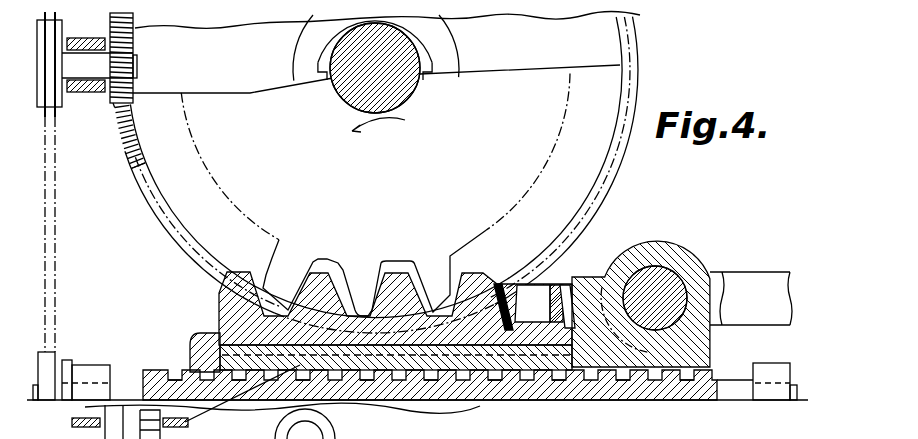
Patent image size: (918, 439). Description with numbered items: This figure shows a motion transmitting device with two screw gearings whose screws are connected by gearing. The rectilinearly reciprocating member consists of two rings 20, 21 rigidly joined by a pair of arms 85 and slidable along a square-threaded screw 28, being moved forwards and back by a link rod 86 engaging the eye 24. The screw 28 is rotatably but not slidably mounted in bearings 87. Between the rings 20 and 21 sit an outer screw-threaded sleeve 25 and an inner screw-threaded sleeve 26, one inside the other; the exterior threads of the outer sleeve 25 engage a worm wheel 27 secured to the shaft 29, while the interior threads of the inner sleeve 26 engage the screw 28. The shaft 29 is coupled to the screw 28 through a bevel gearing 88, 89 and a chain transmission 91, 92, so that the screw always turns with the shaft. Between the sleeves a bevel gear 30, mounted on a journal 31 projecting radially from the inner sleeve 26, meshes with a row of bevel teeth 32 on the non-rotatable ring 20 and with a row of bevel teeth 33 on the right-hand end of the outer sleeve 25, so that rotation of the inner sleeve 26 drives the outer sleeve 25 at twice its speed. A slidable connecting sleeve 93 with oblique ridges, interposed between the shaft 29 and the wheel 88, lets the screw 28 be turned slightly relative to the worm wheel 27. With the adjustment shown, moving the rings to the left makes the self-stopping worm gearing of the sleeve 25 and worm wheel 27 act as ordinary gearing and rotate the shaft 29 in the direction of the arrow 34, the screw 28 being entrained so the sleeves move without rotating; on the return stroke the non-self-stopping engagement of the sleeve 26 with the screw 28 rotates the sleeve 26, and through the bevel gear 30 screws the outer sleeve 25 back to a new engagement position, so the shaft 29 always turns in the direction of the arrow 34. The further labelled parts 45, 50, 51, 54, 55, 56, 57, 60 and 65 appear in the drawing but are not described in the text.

The ring 20 is at (592, 297).
The ring 21 is at (190, 336).
The eye 24 is at (665, 272).
The outer screw-threaded sleeve 25 is at (222, 295).
The inner screw-threaded sleeve 26 is at (233, 357).
The worm wheel 27 is at (192, 231).
The square-threaded screw 28 is at (583, 387).
The shaft 29 is at (404, 45).
The bevel gear 30 is at (553, 287).
The journal 31 is at (532, 285).
The row of bevel teeth 32 is at (568, 290).
The row of bevel teeth 33 is at (508, 300).
The arrow 34 is at (381, 137).
The lower shaft 45 is at (290, 418).
The upper member 50 is at (468, 7).
The upper member 51 is at (517, 7).
The upper member 54 is at (220, 8).
The upper member 55 is at (367, 7).
The upper member 56 is at (278, 8).
The upper member 57 is at (678, 7).
The upper member 60 is at (325, 7).
The sector arm 65 is at (170, 11).
The arms 85 is at (528, 355).
The link rod 86 is at (757, 288).
The bearings 87 is at (96, 370).
The bevel gear wheel 88 is at (117, 125).
The bevel gear 89 is at (111, 40).
The chain transmission 91 is at (53, 230).
The chain transmission 92 is at (63, 363).
The slidable connecting sleeve 93 is at (327, 41).